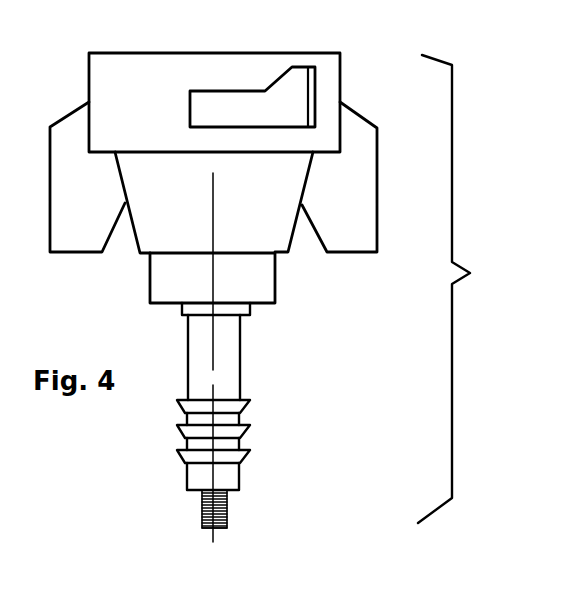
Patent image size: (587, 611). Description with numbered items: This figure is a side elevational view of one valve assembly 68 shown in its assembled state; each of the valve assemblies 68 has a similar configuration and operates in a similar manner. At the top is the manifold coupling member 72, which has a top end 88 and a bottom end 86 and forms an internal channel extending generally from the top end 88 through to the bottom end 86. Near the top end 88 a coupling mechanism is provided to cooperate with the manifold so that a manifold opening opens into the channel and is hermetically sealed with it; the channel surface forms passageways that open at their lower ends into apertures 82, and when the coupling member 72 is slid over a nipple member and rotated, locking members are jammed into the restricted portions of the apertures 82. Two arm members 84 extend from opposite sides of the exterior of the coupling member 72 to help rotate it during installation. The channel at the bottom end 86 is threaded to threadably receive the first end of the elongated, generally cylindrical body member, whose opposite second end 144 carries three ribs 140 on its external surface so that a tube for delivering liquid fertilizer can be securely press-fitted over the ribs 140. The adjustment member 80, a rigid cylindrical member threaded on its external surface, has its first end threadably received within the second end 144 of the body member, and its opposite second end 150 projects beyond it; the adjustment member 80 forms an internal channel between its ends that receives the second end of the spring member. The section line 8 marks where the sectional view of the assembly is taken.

The section line 8- 8 is at (200, 203).
The valve assembly 68 is at (459, 289).
The manifold coupling member 72 is at (272, 213).
The adjustment member 80 is at (228, 497).
The aperture 82 is at (190, 98).
The arm member 84 is at (80, 253).
The bottom end 86 is at (260, 303).
The top end 88 is at (315, 53).
The ribs 140 is at (243, 458).
The second end 144 is at (193, 489).
The second end 150 is at (207, 527).